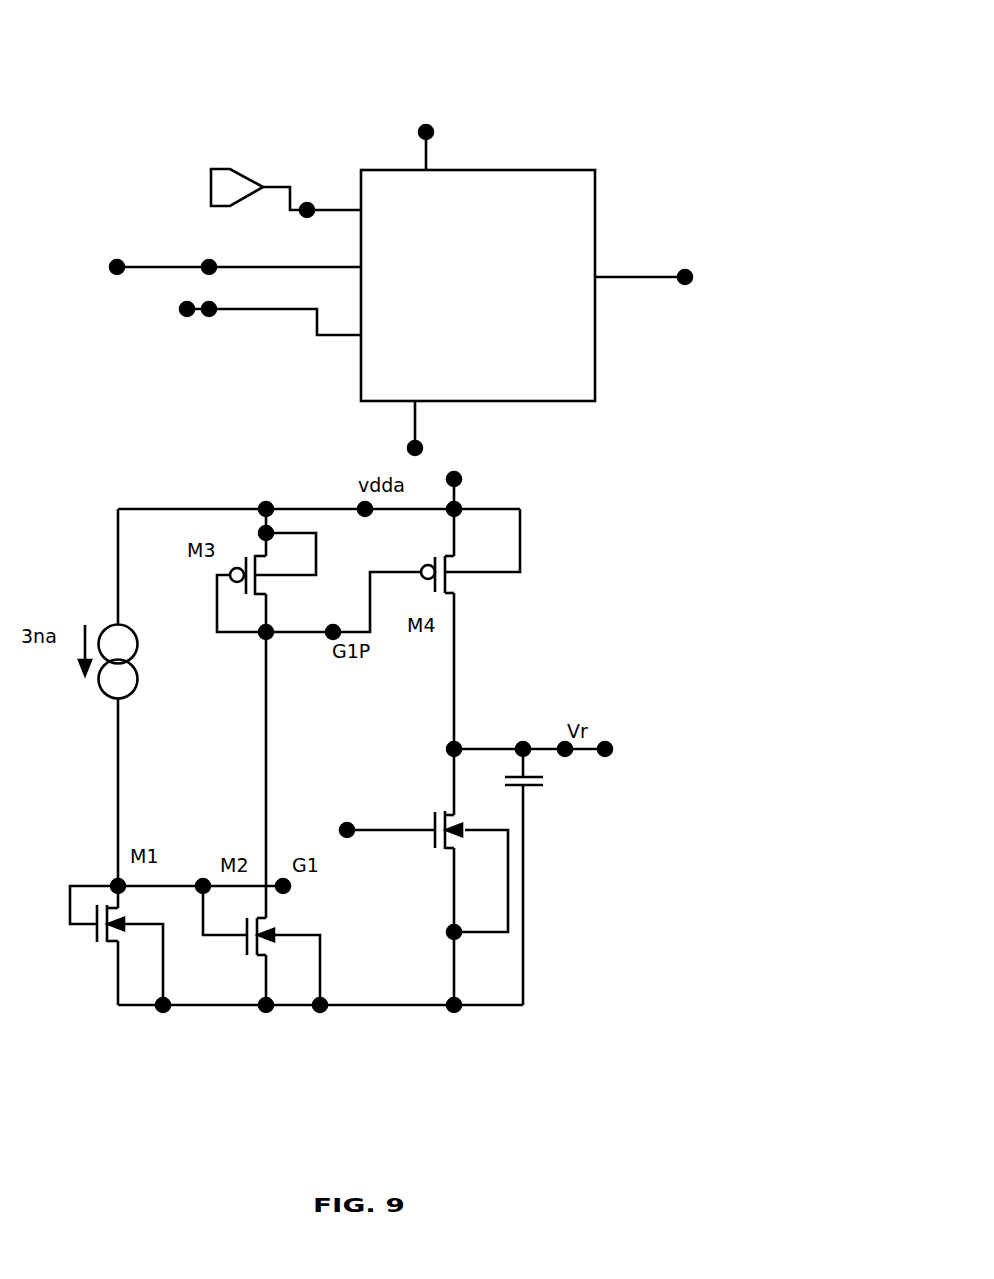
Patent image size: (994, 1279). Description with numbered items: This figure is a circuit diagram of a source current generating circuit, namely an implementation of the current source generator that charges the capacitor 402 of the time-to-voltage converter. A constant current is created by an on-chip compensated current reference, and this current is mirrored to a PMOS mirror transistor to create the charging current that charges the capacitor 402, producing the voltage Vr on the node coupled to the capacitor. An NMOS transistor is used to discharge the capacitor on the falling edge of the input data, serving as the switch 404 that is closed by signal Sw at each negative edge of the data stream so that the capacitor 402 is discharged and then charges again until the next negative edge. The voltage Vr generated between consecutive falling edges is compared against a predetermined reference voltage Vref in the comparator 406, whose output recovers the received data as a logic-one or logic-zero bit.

The comparator 406 is at (578, 125).
The capacitor 402 is at (537, 787).
The switch 404 is at (412, 840).